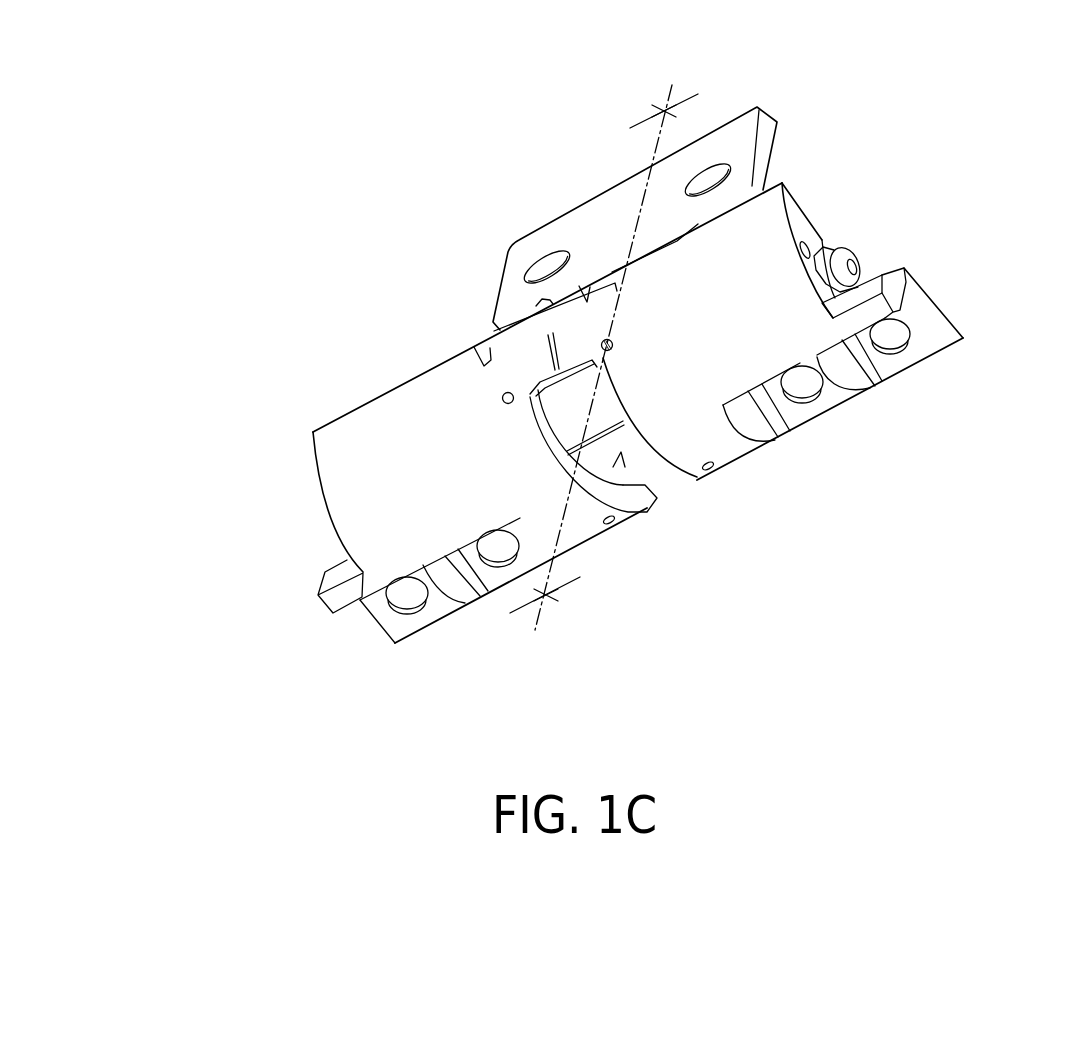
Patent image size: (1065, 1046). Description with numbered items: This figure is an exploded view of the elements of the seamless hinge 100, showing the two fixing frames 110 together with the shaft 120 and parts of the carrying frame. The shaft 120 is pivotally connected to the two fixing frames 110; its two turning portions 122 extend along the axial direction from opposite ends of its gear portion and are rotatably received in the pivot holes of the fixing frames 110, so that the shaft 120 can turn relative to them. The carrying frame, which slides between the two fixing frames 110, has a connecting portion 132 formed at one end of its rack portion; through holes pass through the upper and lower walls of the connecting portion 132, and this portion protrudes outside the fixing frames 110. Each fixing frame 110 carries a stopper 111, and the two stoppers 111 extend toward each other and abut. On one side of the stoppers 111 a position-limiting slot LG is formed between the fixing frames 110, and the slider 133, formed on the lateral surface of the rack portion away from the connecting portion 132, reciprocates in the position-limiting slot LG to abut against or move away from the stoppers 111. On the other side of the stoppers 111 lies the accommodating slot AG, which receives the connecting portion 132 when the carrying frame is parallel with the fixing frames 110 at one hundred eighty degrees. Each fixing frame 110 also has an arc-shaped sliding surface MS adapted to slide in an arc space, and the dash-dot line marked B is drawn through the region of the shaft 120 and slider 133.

The seamless hinge 100 is at (1058, 713).
The fixing frame 110 is at (535, 287).
The stopper 111 is at (567, 342).
The shaft 120 is at (812, 315).
The turning portion 122 is at (855, 263).
The connecting portion 132 is at (732, 147).
The slider 133 is at (567, 410).
The sliding surface MS is at (397, 485).
The accommodating slot AG is at (586, 298).
The position-limiting slot LG is at (621, 453).
The pivot axis B is at (604, 355).